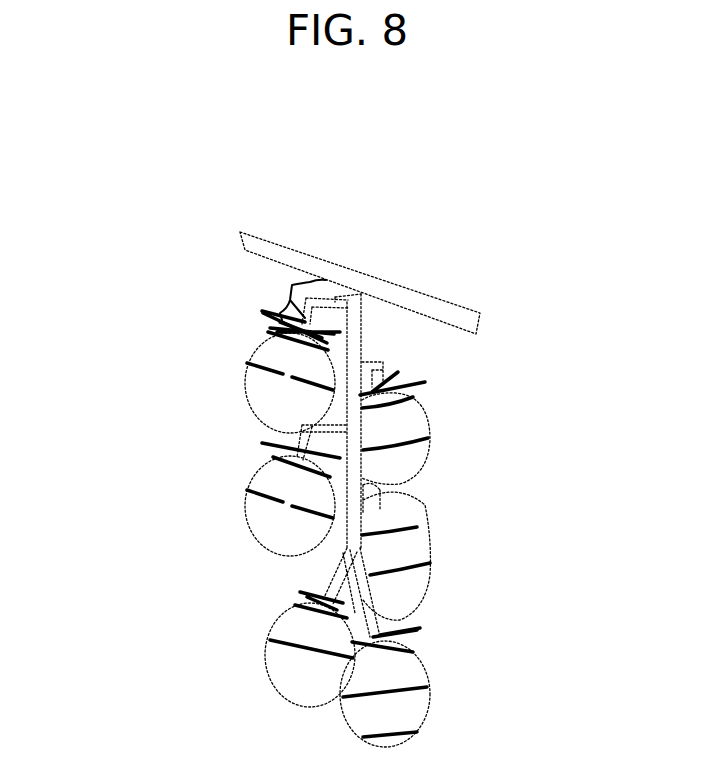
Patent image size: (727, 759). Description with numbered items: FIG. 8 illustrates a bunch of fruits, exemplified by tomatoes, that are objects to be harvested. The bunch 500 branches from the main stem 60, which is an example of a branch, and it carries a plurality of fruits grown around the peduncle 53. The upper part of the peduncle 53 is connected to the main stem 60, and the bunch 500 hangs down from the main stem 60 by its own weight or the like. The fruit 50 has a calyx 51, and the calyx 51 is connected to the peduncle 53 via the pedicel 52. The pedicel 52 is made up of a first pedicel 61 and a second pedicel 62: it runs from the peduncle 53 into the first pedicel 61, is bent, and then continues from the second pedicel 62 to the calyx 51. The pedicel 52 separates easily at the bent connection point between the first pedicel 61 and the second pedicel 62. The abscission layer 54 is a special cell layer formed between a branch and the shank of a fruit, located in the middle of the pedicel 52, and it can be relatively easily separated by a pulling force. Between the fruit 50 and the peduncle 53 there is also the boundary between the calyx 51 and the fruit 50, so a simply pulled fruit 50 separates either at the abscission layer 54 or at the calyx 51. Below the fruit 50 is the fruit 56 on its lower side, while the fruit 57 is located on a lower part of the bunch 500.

The bunch 500 is at (132, 266).
The fruit 50 is at (280, 392).
The fruit 56 is at (280, 523).
The fruit 57 is at (292, 668).
The calyx 51 is at (262, 313).
The second pedicel 62 is at (282, 310).
The pedicel 52 is at (292, 285).
The peduncle 53 is at (355, 344).
The abscission layer 54 is at (312, 303).
The main stem 60 is at (402, 297).
The first pedicel 61 is at (340, 305).